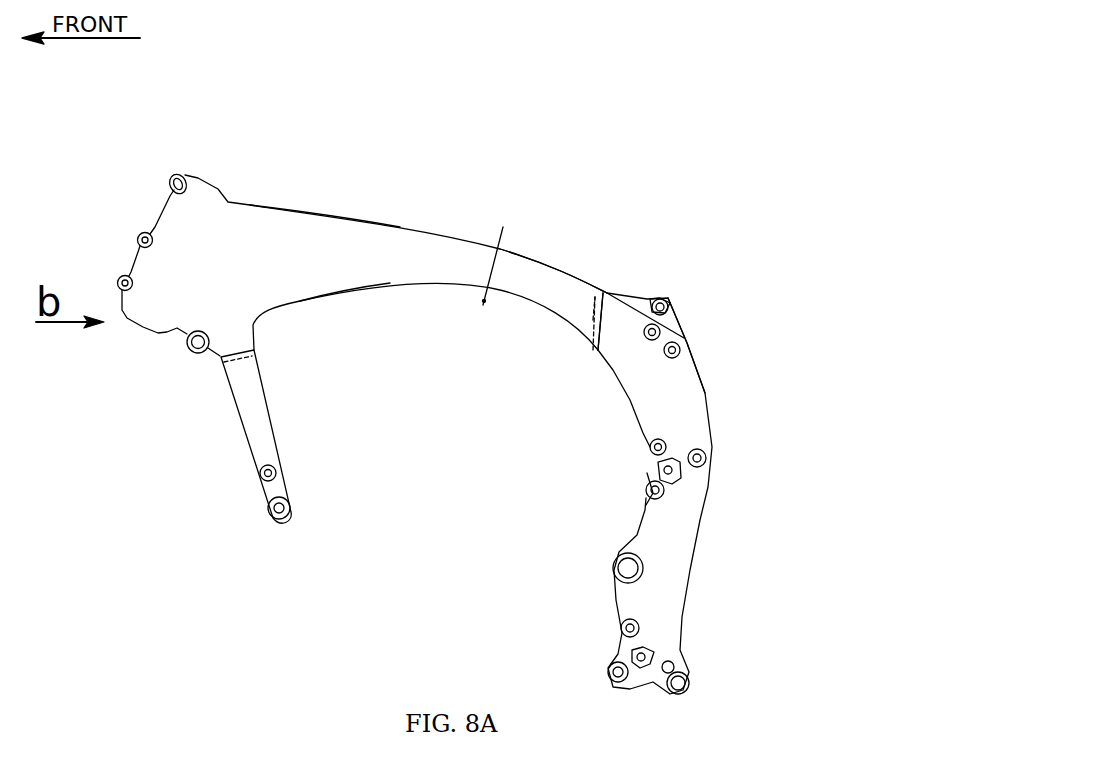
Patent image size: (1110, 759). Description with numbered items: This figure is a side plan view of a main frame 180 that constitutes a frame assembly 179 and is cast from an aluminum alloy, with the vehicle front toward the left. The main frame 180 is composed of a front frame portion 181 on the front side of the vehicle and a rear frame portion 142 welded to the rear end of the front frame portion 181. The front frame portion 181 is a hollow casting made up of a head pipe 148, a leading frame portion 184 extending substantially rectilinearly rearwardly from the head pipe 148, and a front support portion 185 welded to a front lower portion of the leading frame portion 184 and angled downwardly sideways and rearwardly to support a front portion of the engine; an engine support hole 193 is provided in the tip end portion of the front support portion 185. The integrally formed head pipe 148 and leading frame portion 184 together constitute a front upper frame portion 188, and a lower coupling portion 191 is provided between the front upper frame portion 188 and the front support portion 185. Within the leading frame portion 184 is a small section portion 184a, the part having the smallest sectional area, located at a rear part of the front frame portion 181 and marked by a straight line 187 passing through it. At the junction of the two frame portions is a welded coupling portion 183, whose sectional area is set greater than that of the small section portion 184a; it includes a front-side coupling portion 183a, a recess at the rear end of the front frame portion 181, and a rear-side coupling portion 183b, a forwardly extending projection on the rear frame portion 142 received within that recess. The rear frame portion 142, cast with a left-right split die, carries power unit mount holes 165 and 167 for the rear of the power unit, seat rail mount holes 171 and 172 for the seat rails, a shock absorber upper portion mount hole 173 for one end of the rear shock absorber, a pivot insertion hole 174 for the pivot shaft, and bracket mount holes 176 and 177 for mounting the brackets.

The rear frame portion 142 is at (710, 402).
The head pipe 148 is at (165, 224).
The power unit mount hole 165 is at (650, 447).
The power unit mount hole 167 is at (624, 628).
The seat rail mount hole 171 is at (668, 305).
The seat rail mount hole 172 is at (706, 458).
The shock absorber upper portion mount hole 173 is at (680, 343).
The pivot insertion hole 174 is at (620, 568).
The bracket mount hole 176 is at (680, 472).
The bracket mount hole 177 is at (652, 655).
The frame assembly 179 is at (645, 140).
The main frame 180 is at (557, 147).
The front frame portion 181 is at (352, 222).
The coupling portion 183 is at (606, 292).
The front-side coupling portion 183a is at (591, 350).
The rear-side coupling portion 183b is at (593, 320).
The leading frame portion 184 is at (410, 226).
The small section portion 184a is at (507, 241).
The front support portion 185 is at (240, 413).
The straight line 187 is at (484, 301).
The front upper frame portion 188 is at (335, 300).
The lower coupling portion 191 is at (213, 353).
The engine support hole 193 is at (262, 476).